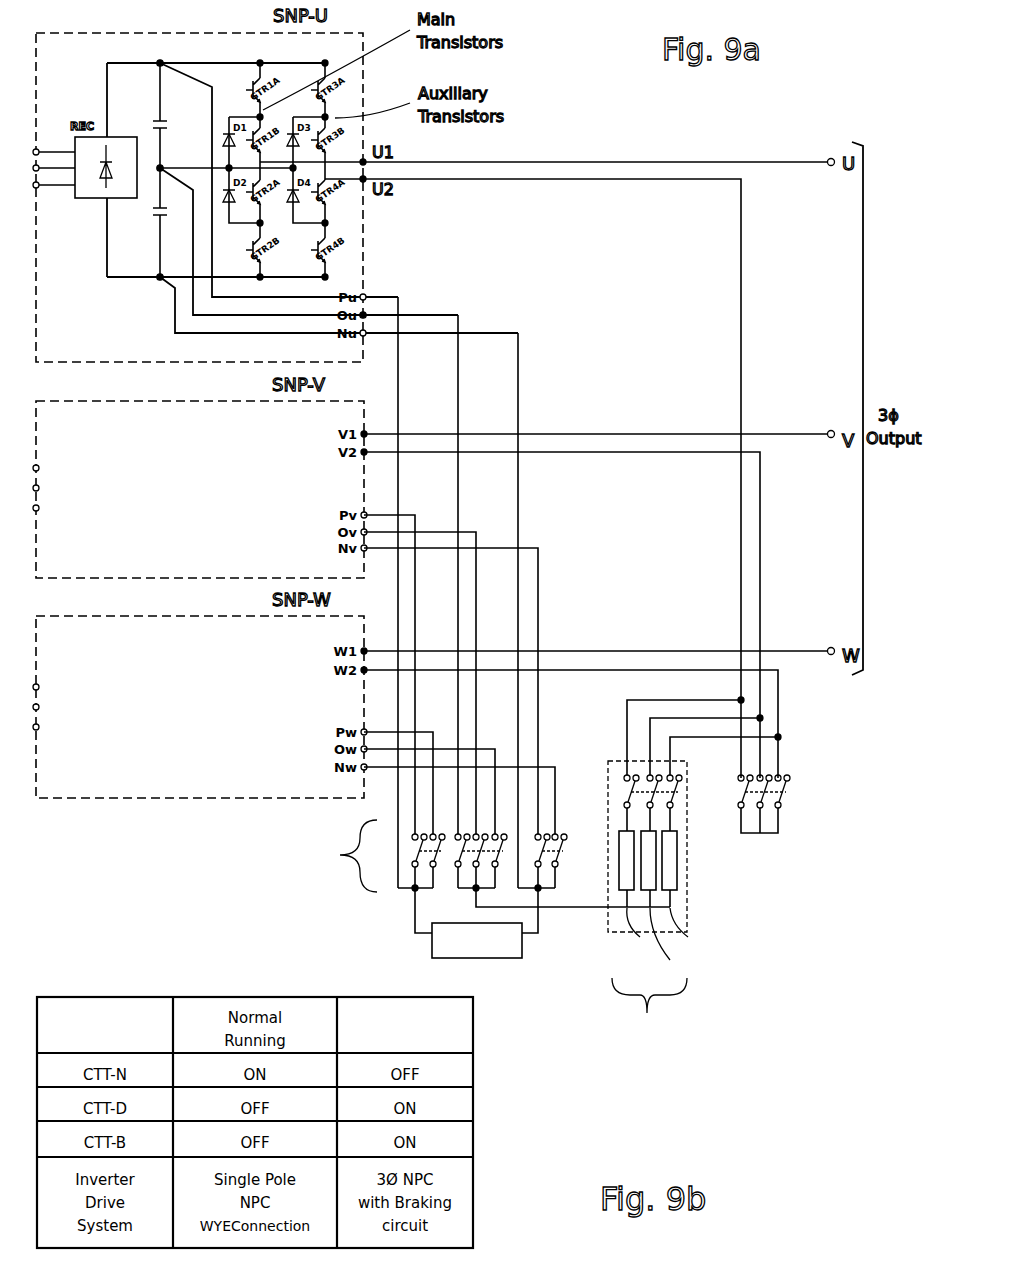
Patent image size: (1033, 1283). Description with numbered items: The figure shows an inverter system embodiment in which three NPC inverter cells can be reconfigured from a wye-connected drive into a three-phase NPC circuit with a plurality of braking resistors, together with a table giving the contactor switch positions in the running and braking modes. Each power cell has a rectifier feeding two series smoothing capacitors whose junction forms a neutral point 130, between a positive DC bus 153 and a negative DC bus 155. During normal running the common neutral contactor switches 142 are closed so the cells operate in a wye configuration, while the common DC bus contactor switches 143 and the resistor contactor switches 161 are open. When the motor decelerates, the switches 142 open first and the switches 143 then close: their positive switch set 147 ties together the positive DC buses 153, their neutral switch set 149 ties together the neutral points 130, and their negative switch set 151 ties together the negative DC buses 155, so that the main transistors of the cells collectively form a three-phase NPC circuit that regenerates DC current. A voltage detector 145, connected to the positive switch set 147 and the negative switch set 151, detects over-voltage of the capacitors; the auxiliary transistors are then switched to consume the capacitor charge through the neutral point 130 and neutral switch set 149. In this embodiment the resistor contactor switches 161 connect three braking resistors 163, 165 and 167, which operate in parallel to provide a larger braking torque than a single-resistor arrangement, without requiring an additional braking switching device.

The positive DC bus 153 is at (158, 60).
The neutral point 130 is at (167, 158).
The negative DC bus 155 is at (158, 282).
The common DC bus contactor switches 143 is at (465, 896).
The positive switch set 147 is at (403, 880).
The neutral switch set 149 is at (467, 883).
The negative switch set 151 is at (543, 879).
The voltage detector 145 is at (510, 950).
The braking resistor 163 is at (623, 838).
The braking resistor 165 is at (648, 861).
The braking resistor 167 is at (668, 882).
The common neutral contactor switches 142 is at (782, 810).
The resistor contactor switches 161 is at (694, 896).